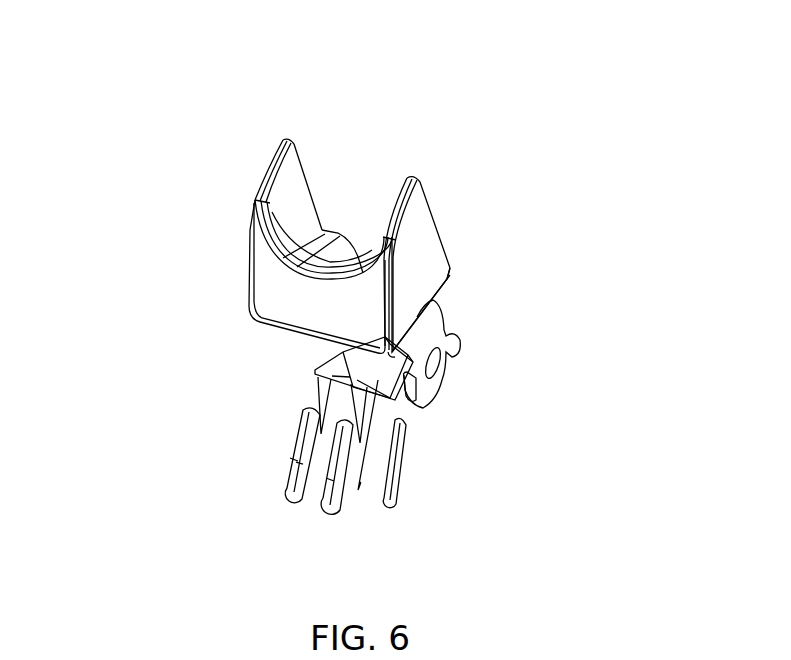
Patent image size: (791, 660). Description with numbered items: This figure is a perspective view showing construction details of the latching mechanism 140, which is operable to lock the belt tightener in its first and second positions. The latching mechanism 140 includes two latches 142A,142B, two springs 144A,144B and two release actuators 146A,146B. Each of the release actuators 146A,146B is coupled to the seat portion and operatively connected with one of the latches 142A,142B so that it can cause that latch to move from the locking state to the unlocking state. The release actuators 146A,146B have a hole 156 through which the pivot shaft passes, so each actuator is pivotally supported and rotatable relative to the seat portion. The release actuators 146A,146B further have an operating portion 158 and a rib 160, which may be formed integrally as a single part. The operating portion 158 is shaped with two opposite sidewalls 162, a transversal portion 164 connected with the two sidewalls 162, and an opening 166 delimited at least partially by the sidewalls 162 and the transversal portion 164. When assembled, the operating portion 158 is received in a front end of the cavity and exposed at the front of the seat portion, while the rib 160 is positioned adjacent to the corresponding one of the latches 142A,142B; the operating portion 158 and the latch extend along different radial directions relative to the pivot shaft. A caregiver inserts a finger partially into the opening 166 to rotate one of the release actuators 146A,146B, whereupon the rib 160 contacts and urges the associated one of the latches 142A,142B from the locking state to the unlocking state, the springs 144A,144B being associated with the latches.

The latching mechanism 140 is at (80, 35).
The latches 142A,142B is at (283, 478).
The springs 144A,144B is at (398, 470).
The release actuators 146A,146B is at (447, 280).
The hole 156 is at (433, 368).
The operating portion 158 is at (283, 137).
The rib 160 is at (315, 378).
The sidewalls 162 is at (413, 213).
The transversal portion 164 is at (268, 293).
The opening 166 is at (282, 234).